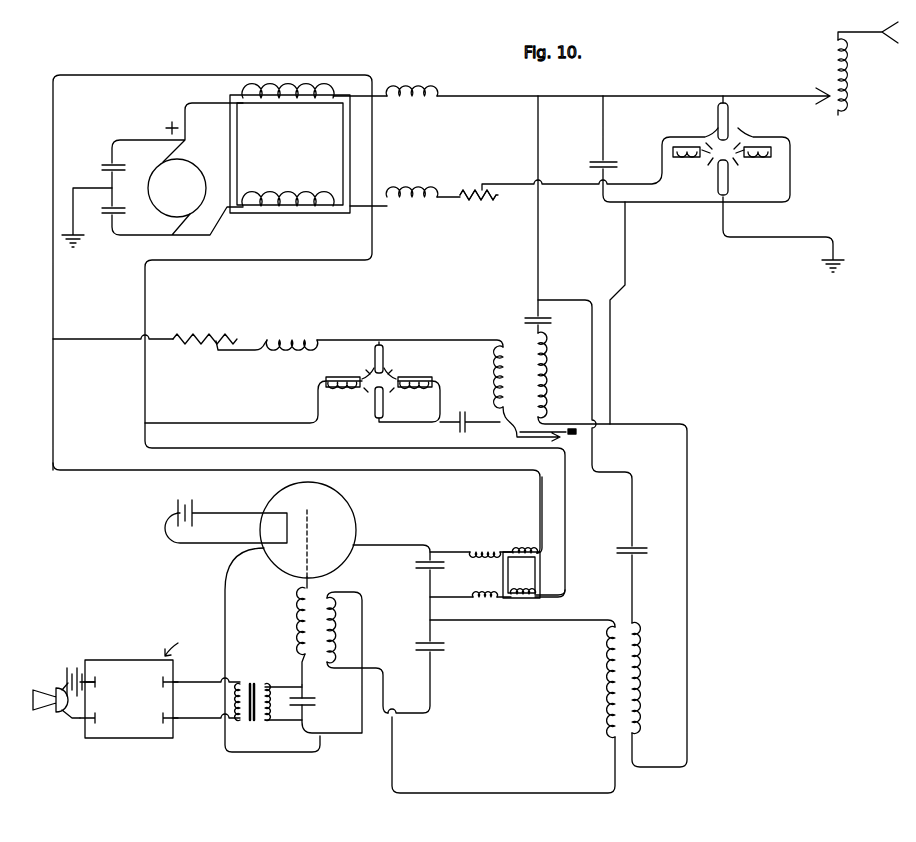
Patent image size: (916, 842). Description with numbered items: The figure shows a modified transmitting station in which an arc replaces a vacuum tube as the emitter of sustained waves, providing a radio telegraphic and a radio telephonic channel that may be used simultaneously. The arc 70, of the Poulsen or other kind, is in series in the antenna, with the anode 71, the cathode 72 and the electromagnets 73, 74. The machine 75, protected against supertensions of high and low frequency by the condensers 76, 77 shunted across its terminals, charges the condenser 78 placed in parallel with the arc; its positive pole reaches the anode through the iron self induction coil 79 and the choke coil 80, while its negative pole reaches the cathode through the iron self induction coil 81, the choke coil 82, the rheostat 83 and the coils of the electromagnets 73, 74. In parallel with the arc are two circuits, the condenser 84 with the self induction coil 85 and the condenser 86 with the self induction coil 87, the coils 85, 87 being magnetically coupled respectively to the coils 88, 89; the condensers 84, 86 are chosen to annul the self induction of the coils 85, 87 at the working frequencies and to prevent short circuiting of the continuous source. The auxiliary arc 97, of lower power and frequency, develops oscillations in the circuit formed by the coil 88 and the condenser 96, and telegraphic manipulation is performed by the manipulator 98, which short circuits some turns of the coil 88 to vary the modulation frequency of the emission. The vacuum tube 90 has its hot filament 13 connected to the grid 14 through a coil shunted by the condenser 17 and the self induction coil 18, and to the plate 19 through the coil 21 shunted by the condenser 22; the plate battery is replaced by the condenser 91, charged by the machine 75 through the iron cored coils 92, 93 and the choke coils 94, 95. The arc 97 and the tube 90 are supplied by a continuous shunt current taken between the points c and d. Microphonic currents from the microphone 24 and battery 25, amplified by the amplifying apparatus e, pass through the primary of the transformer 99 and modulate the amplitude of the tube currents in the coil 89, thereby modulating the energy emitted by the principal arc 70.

The hot filament 13 is at (227, 518).
The grid 14 is at (305, 535).
The condenser 17 is at (315, 702).
The self induction coil 18 is at (286, 621).
The plate 19 is at (330, 502).
The self induction coil 21 is at (341, 630).
The condenser 22 is at (442, 645).
The microphone 24 is at (54, 708).
The battery 25 is at (71, 672).
The arc 70 is at (722, 135).
The anode 71 is at (734, 121).
The cathode 72 is at (735, 177).
The electromagnet 73 is at (686, 138).
The electromagnet 74 is at (757, 138).
The machine 75 is at (177, 169).
The condenser 76 is at (103, 167).
The condenser 77 is at (103, 212).
The condenser 78 is at (591, 165).
The iron self induction coil 79 is at (290, 148).
The choke coil 80 is at (412, 106).
The iron self-induction coil 81 is at (288, 194).
The choke coil 82 is at (412, 185).
The rheostat 83 is at (478, 207).
The condenser 84 is at (545, 322).
The self-induction coil 85 is at (550, 375).
The condenser 86 is at (643, 550).
The self-induction coil 87 is at (649, 678).
The self induction coil 88 is at (484, 377).
The self induction coil 89 is at (597, 682).
The vacuum tube 90 is at (268, 530).
The condenser 91 is at (420, 565).
The iron cored coil 92 is at (521, 563).
The iron cored coil 93 is at (523, 603).
The choke coil 94 is at (485, 542).
The choke coil 95 is at (484, 605).
The condenser 96 is at (470, 417).
The auxiliary arc 97 is at (383, 370).
The manipulator 98 is at (574, 441).
The transformer 99 is at (253, 692).
The point c is at (373, 112).
The point d is at (373, 178).
The amplifying apparatus e is at (128, 726).